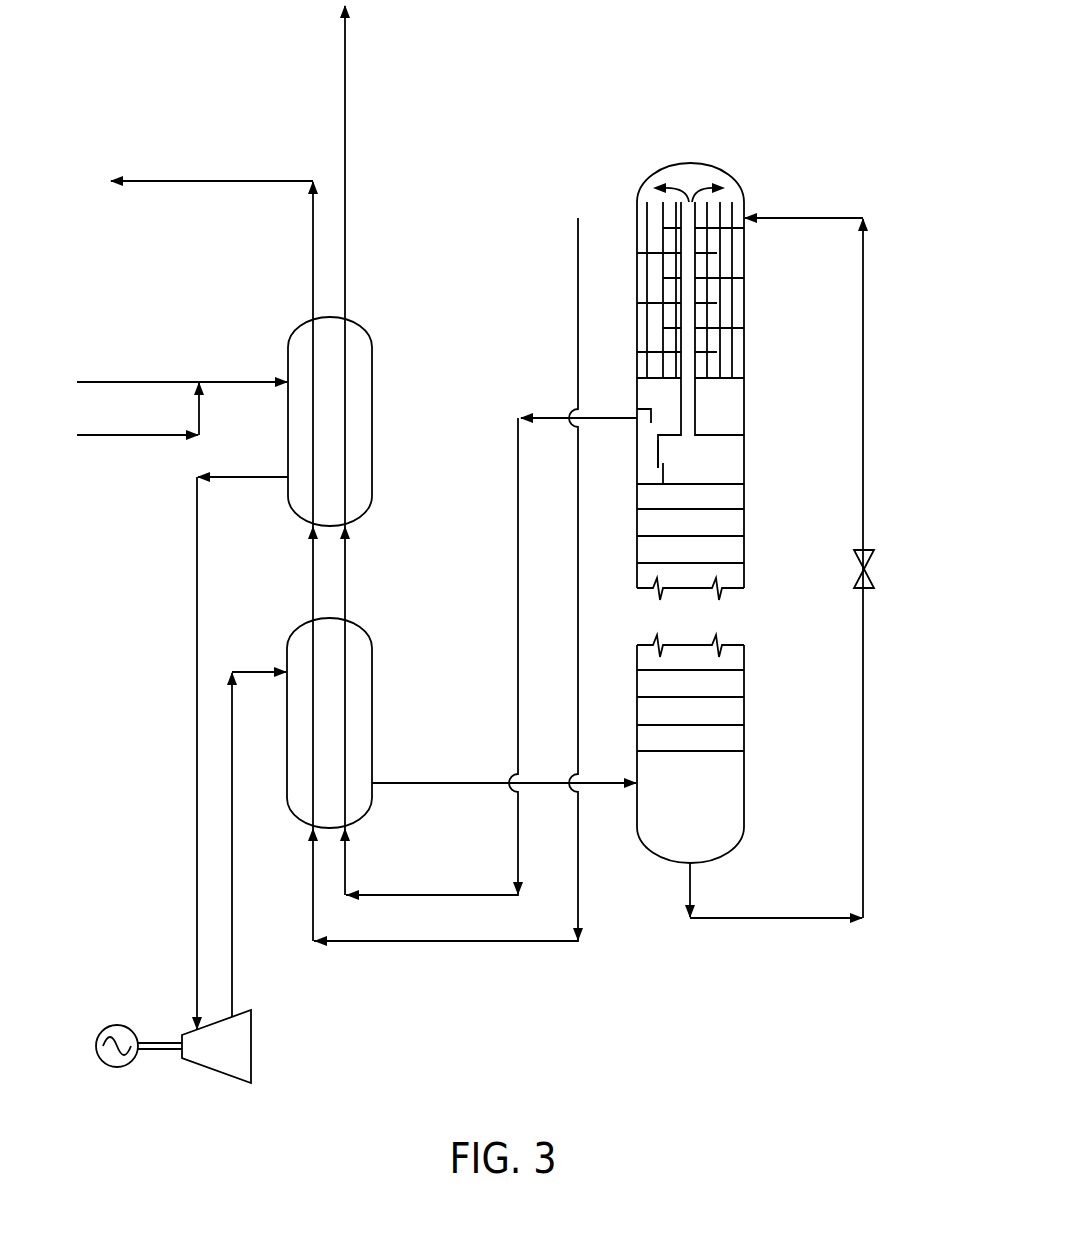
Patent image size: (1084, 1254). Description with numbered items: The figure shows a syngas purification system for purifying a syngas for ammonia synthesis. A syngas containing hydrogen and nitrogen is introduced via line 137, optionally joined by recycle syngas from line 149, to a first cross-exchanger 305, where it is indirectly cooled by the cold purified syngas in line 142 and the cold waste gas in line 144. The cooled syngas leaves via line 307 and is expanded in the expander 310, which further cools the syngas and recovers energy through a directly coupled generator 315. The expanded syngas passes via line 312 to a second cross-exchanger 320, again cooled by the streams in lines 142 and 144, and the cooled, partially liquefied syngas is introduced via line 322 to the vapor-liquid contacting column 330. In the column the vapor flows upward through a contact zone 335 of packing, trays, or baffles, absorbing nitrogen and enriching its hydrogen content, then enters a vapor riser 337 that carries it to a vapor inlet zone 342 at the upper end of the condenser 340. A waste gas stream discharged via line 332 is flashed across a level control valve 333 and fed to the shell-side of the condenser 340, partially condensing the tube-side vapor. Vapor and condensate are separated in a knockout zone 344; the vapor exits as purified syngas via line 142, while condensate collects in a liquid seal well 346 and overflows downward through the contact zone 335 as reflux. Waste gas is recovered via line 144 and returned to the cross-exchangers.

The line 137 is at (102, 382).
The line 142 is at (345, 68).
The line 144 is at (183, 179).
The line 149 is at (100, 437).
The cross-exchanger 305 is at (373, 384).
The line 307 is at (196, 630).
The expander 310 is at (253, 1040).
The line 312 is at (233, 971).
The generator 315 is at (113, 1068).
The cross-exchanger 320 is at (373, 668).
The line 322 is at (438, 782).
The vapor-liquid contacting column 330 is at (745, 779).
The line 332 is at (793, 920).
The level control valve 333 is at (868, 573).
The contact zone 335 is at (725, 553).
The vapor riser 337 is at (696, 400).
The condenser 340 is at (745, 210).
The vapor inlet zone 342 is at (651, 200).
The knockout zone 344 is at (662, 392).
The liquid seal well 346 is at (648, 450).